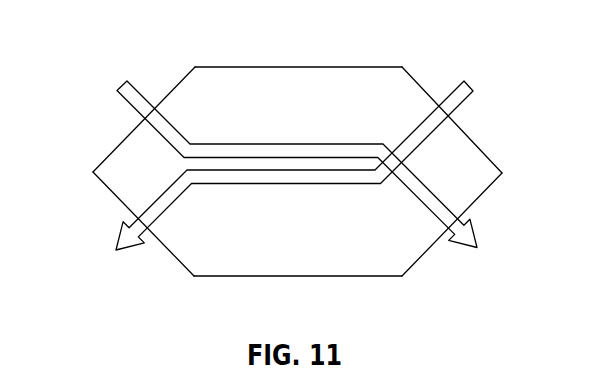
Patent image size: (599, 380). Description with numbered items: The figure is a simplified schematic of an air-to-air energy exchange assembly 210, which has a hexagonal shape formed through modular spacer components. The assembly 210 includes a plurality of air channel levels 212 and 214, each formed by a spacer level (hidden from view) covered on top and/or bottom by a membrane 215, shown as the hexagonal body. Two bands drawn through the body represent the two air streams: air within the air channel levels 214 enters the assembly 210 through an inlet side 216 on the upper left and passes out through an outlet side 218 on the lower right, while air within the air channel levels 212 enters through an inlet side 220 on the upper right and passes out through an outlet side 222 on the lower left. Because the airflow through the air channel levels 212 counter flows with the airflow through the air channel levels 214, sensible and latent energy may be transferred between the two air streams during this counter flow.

The air-to-air energy exchange assembly 210 is at (471, 53).
The air channel levels 212 is at (317, 183).
The air channel levels 214 is at (322, 143).
The membrane 215 is at (237, 87).
The inlet side 216 is at (123, 142).
The outlet side 218 is at (420, 257).
The inlet side 220 is at (477, 143).
The outlet side 222 is at (175, 254).